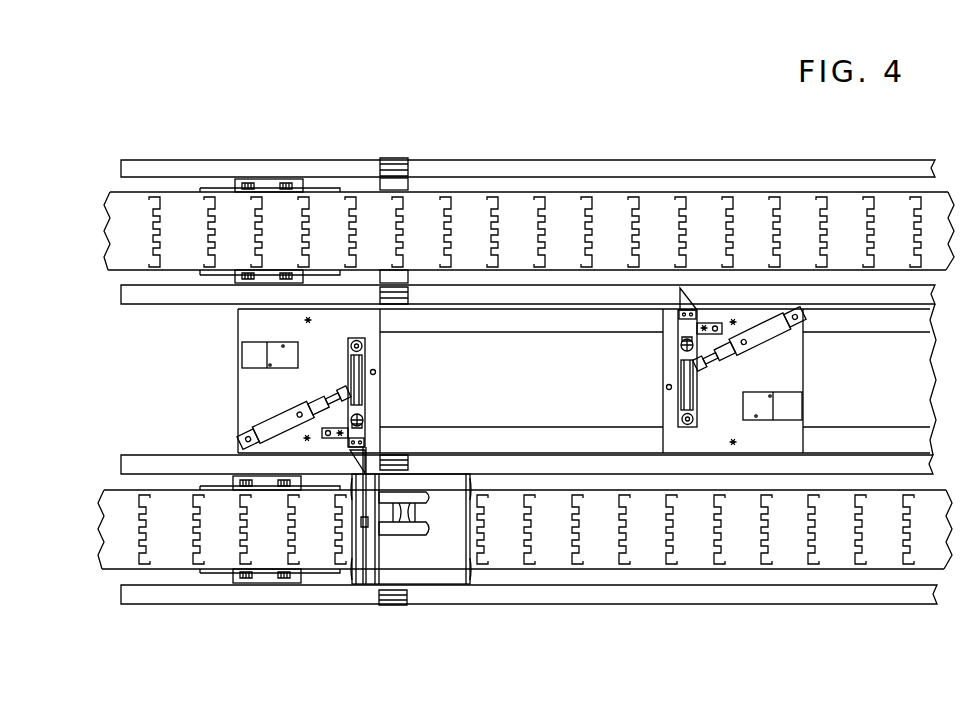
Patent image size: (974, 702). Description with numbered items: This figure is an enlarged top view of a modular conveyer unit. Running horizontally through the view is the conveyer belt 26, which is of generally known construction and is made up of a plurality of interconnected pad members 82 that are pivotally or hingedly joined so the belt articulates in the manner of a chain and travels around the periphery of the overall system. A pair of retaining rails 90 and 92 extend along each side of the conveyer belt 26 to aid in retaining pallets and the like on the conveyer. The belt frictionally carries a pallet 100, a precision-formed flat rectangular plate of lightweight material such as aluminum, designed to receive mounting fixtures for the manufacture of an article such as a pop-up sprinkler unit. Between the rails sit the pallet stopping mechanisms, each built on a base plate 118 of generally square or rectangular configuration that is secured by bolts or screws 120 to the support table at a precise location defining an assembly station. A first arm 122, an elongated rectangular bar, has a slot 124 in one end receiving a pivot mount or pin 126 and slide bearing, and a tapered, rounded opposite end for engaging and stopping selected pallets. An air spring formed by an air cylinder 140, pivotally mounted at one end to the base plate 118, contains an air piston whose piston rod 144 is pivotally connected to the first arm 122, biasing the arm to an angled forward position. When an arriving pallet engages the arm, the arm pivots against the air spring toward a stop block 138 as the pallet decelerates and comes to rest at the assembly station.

The conveyer belt 26 is at (538, 153).
The pad members 82 is at (665, 212).
The retaining rail 90 is at (193, 597).
The retaining rail 92 is at (168, 462).
The pallet 100 is at (445, 592).
The base plate 118 is at (255, 388).
The bolts or screws 120 is at (308, 321).
The first arm 122 is at (348, 365).
The slot 124 is at (362, 373).
The pivot mount or pin 126 is at (367, 343).
The stop block 138 is at (363, 427).
The air cylinder 140 is at (267, 425).
The piston rod 144 is at (328, 402).